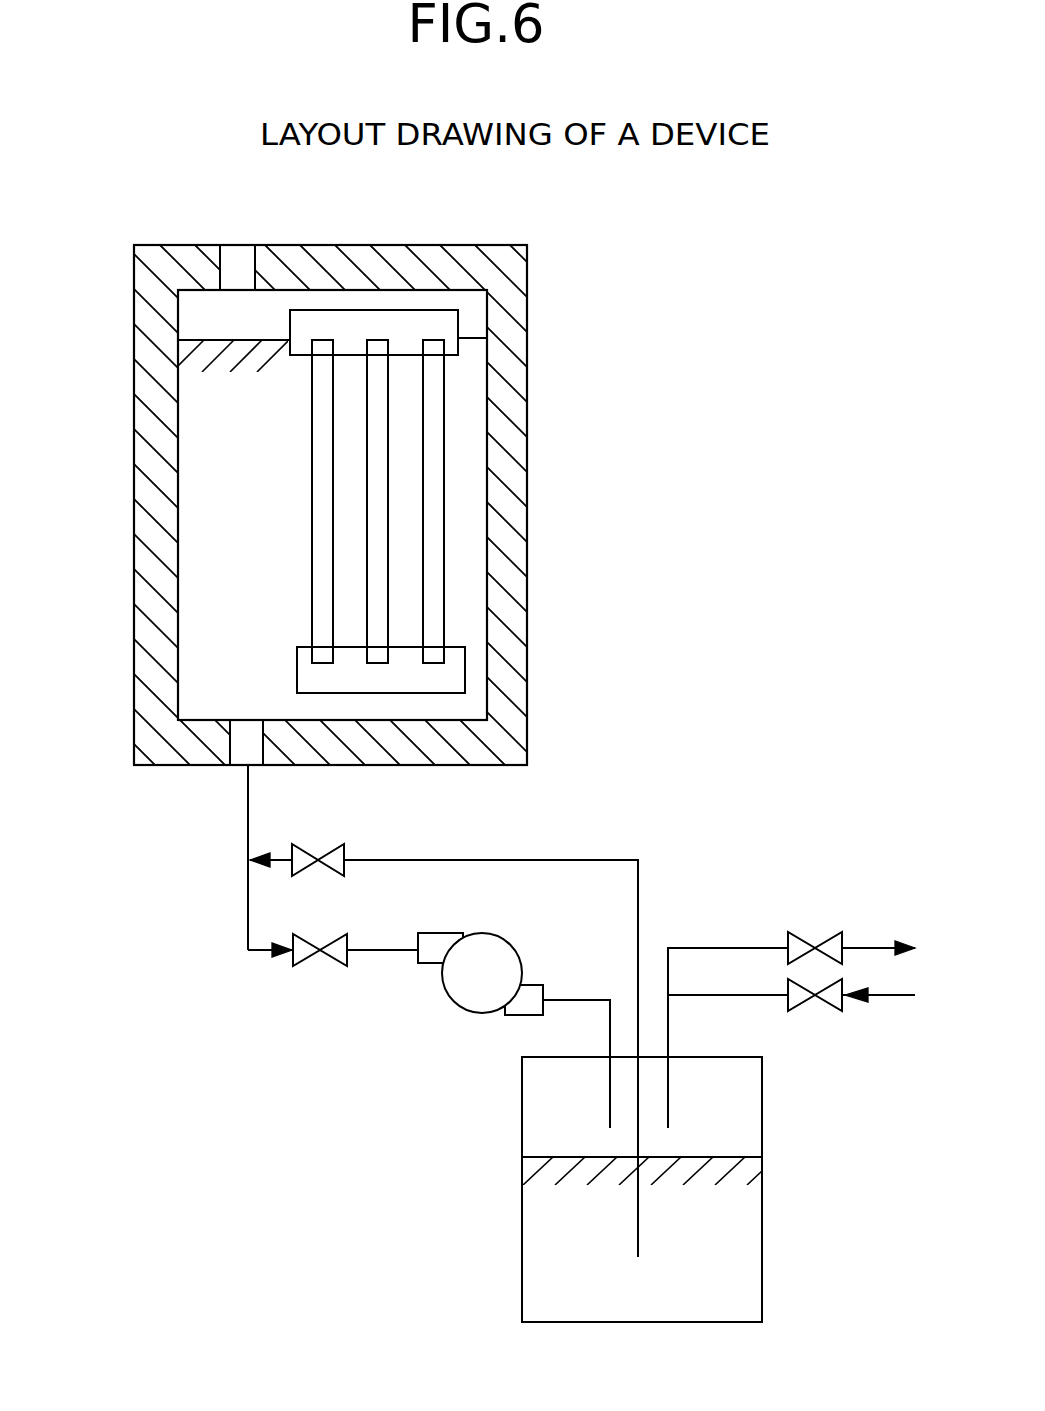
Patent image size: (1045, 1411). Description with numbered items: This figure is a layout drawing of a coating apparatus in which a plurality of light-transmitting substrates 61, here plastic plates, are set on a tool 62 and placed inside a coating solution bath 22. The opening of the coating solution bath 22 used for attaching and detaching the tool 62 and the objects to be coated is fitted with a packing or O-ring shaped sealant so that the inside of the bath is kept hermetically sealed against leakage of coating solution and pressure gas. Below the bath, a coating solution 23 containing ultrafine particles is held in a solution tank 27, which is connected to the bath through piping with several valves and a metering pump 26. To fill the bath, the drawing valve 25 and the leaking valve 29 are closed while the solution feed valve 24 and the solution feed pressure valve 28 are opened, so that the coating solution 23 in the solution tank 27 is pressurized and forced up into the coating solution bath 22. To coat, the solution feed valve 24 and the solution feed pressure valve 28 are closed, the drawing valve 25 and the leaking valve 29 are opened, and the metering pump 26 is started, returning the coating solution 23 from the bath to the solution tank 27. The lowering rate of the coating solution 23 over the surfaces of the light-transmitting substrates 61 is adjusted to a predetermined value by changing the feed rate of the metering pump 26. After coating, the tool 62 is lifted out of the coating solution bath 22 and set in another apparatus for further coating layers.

The coating solution bath 22 is at (507, 412).
The coating solution 23 is at (228, 410).
The solution feed valve 24 is at (330, 847).
The drawing valve 25 is at (312, 963).
The metering pump 26 is at (487, 960).
The solution tank 27 is at (731, 1227).
The solution feed pressure valve 28 is at (800, 1012).
The leaking valve 29 is at (797, 930).
The light-transmitting substrates 61 is at (430, 467).
The tool 62 is at (448, 318).